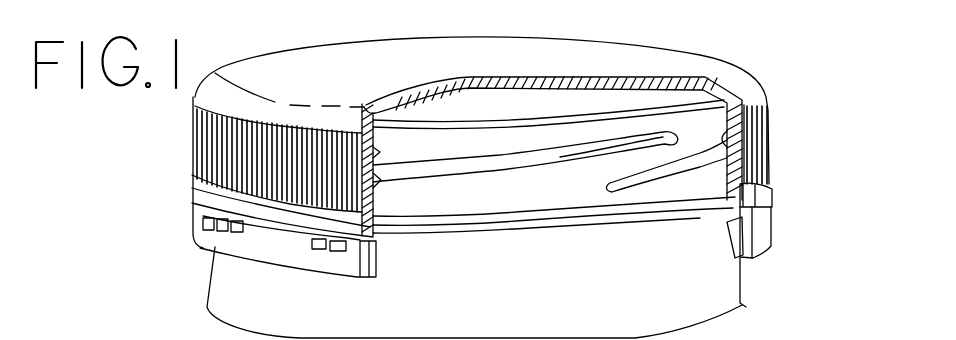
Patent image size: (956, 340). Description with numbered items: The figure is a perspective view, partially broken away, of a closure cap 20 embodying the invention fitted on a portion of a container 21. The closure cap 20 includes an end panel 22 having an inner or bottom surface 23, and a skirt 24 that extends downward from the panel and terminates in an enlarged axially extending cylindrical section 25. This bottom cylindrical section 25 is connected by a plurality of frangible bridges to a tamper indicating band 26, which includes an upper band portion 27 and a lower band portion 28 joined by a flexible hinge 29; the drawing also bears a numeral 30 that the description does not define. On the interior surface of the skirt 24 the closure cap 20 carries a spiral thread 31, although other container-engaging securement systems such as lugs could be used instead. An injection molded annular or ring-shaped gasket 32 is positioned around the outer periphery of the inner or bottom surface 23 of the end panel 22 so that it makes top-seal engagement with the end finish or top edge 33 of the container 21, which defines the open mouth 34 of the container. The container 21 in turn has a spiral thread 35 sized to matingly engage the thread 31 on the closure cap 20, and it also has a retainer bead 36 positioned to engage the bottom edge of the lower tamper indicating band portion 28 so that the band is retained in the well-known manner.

The closure cap 20 is at (787, 81).
The container 21 is at (753, 297).
The end panel 22 is at (322, 60).
The inner or bottom surface 23 is at (612, 104).
The skirt 24 is at (744, 138).
The enlarged axially extending cylindrical section 25 is at (773, 195).
The tamper indicating band 26 is at (777, 221).
The upper band portion 27 is at (764, 242).
The lower band portion 28 is at (728, 233).
The flexible hinge 29 is at (738, 263).
The tamper-evident band tab 30 is at (382, 243).
The spiral thread 31 is at (724, 139).
The injection molded annular gasket 32 is at (702, 92).
The end finish or top edge 33 is at (470, 127).
The open mouth 34 is at (557, 119).
The spiral thread 35 is at (490, 172).
The retainer bead 36 is at (552, 220).